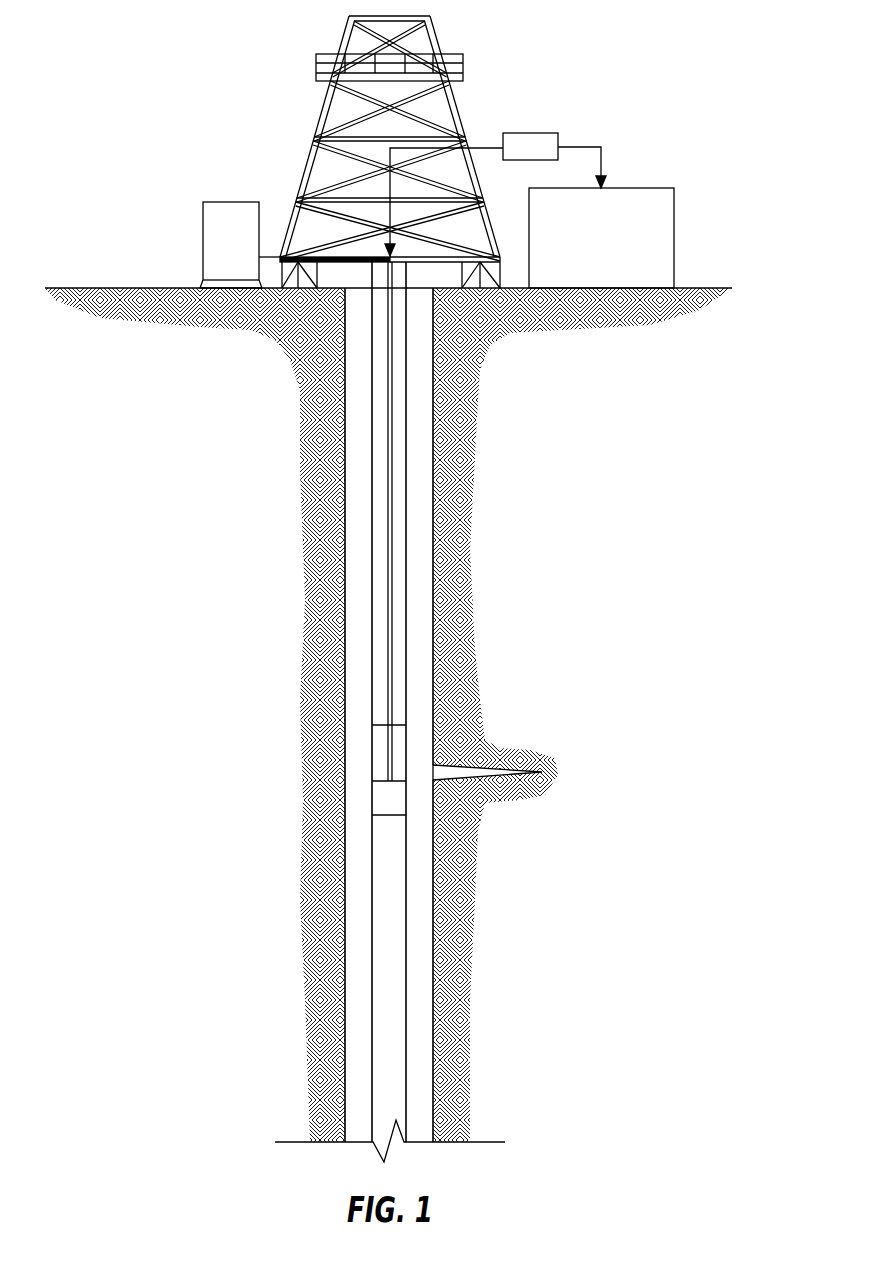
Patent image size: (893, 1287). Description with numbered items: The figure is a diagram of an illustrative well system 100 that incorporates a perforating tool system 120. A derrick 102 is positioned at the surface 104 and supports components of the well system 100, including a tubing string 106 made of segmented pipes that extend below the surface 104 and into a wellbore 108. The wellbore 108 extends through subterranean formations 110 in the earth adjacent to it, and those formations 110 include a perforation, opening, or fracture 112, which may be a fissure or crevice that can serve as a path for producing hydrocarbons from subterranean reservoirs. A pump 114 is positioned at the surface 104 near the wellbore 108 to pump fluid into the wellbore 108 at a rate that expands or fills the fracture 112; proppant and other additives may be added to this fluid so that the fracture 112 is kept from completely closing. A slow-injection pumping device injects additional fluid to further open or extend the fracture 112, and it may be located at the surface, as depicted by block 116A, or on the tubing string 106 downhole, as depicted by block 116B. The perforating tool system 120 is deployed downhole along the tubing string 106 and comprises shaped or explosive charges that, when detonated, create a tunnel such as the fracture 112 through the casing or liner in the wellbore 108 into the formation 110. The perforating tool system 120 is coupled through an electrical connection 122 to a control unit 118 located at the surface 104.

The well system 100 is at (148, 57).
The derrick 102 is at (318, 117).
The surface 104 is at (704, 288).
The tubing string 106 is at (372, 470).
The wellbore 108 is at (436, 710).
The subterranean formations 110 is at (455, 378).
The fracture 112 is at (520, 772).
The pump 114 is at (633, 188).
The slow-injection pumping device 116A is at (530, 132).
The slow-injection pumping device 116B is at (389, 757).
The control unit 118 is at (203, 243).
The perforating tool system 120 is at (391, 805).
The electrical connection 122 is at (388, 386).